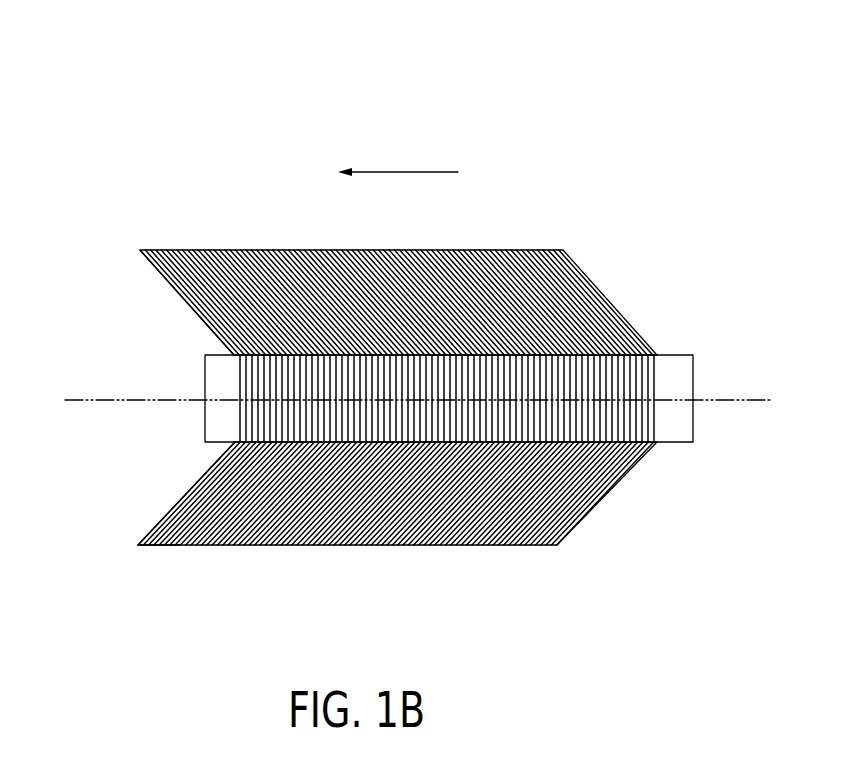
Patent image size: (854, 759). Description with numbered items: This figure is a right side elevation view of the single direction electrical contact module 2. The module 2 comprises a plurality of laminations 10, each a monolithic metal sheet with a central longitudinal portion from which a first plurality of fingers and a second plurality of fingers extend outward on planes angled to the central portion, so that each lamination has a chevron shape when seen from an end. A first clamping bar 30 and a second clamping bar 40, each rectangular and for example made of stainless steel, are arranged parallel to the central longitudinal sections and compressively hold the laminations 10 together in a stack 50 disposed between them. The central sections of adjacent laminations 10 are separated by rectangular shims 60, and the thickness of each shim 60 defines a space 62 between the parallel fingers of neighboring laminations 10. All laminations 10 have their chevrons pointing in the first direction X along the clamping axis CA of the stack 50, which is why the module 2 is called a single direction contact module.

The single direction electrical contact module 2 is at (590, 98).
The lamination 10 is at (163, 276).
The first clamping bar 30 is at (220, 380).
The second clamping bar 40 is at (677, 367).
The stack 50 is at (264, 212).
The shim 60 is at (259, 330).
The space 62 is at (152, 570).